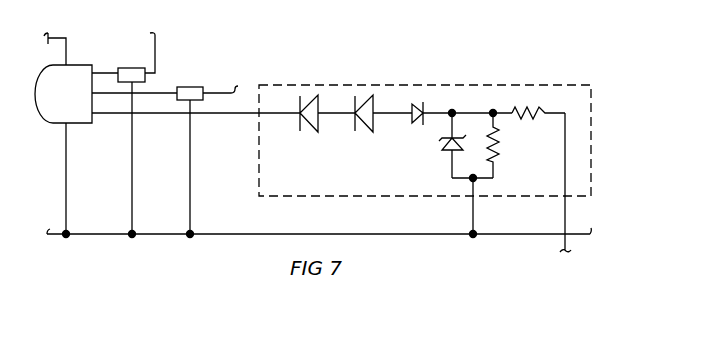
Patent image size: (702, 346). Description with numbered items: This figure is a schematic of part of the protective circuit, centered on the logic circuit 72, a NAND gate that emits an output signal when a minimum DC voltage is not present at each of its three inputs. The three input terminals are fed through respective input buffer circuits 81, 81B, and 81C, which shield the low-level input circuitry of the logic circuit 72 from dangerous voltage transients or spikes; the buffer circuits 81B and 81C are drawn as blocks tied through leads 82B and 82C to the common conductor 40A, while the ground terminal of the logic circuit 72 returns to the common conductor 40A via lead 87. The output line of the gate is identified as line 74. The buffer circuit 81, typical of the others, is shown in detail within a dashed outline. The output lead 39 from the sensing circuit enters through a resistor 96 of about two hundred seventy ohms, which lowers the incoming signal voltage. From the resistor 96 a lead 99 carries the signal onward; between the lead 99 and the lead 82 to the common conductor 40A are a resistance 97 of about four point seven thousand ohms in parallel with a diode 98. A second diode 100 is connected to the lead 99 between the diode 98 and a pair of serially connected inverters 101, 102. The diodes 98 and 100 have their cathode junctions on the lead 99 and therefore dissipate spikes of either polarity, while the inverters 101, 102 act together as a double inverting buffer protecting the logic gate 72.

The logic circuit 72 is at (80, 106).
The input buffer circuit 81C is at (127, 67).
The input buffer circuit 81B is at (190, 86).
The lead 87 is at (67, 182).
The gate output line 74 is at (164, 116).
The lead 82C is at (132, 185).
The lead 82B is at (192, 212).
The input buffer circuit 81 is at (319, 84).
The inverter 102 is at (305, 124).
The inverter 101 is at (362, 124).
The diode 100 is at (410, 107).
The lead 99 is at (472, 110).
The resistor 96 is at (530, 105).
The diode 98 is at (445, 150).
The resistance 97 is at (498, 148).
The lead 82 is at (472, 215).
The output lead 39 is at (565, 216).
The common conductor 40A is at (348, 232).